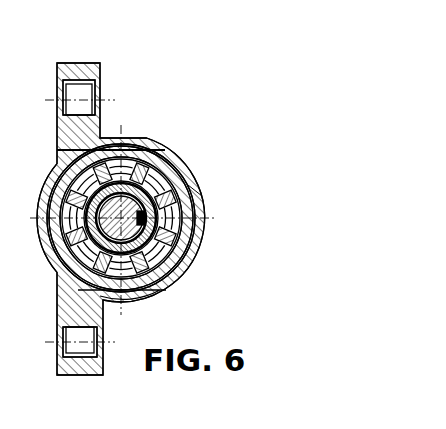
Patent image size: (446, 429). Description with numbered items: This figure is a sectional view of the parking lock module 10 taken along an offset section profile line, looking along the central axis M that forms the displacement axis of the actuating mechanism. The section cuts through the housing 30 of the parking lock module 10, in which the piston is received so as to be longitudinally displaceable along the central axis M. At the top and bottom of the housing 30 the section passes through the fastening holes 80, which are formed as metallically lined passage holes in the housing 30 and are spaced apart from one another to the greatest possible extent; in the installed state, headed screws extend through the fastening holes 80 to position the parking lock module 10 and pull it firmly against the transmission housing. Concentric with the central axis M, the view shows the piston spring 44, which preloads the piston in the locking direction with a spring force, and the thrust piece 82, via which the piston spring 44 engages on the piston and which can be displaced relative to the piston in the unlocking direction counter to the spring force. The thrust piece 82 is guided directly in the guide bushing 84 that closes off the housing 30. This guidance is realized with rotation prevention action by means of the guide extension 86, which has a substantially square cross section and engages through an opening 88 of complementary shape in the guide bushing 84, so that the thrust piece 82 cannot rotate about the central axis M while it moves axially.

The parking lock module 10 is at (182, 104).
The housing 30 is at (132, 136).
The piston spring 44 is at (162, 187).
The fastening holes 80 is at (86, 87).
The thrust piece 82 is at (192, 213).
The guide bushing 84 is at (172, 265).
The guide extension 86 is at (180, 236).
The opening 88 is at (146, 284).
The central axis M is at (196, 190).